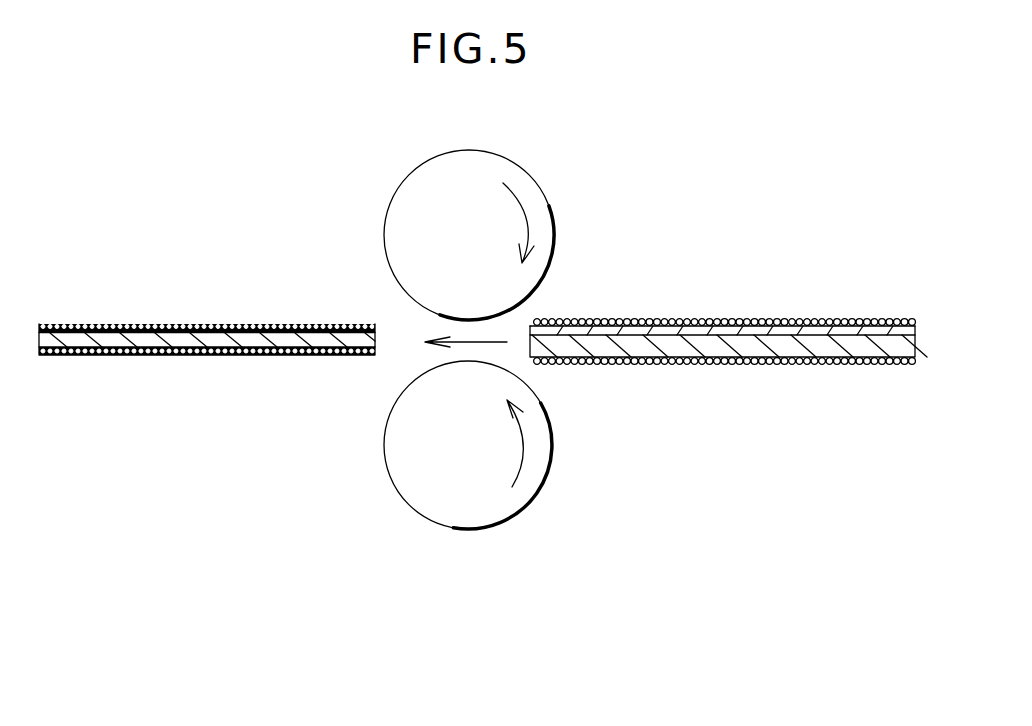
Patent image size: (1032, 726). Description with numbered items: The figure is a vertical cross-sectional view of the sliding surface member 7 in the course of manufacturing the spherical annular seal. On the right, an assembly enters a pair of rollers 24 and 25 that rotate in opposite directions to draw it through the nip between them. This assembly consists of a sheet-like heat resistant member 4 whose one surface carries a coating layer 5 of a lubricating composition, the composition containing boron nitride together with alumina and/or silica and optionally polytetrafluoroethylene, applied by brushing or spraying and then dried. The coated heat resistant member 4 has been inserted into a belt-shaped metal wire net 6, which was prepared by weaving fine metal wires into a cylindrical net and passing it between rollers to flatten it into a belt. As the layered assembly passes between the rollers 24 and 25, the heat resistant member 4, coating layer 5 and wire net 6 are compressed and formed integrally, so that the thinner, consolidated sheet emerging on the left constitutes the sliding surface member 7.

The sheet-like heat resistant member 4 is at (108, 338).
The coating layer 5 is at (226, 324).
The belt-shaped metal wire net 6 is at (158, 323).
The sliding surface member 7 is at (214, 368).
The roller 24 is at (540, 194).
The roller 25 is at (470, 518).